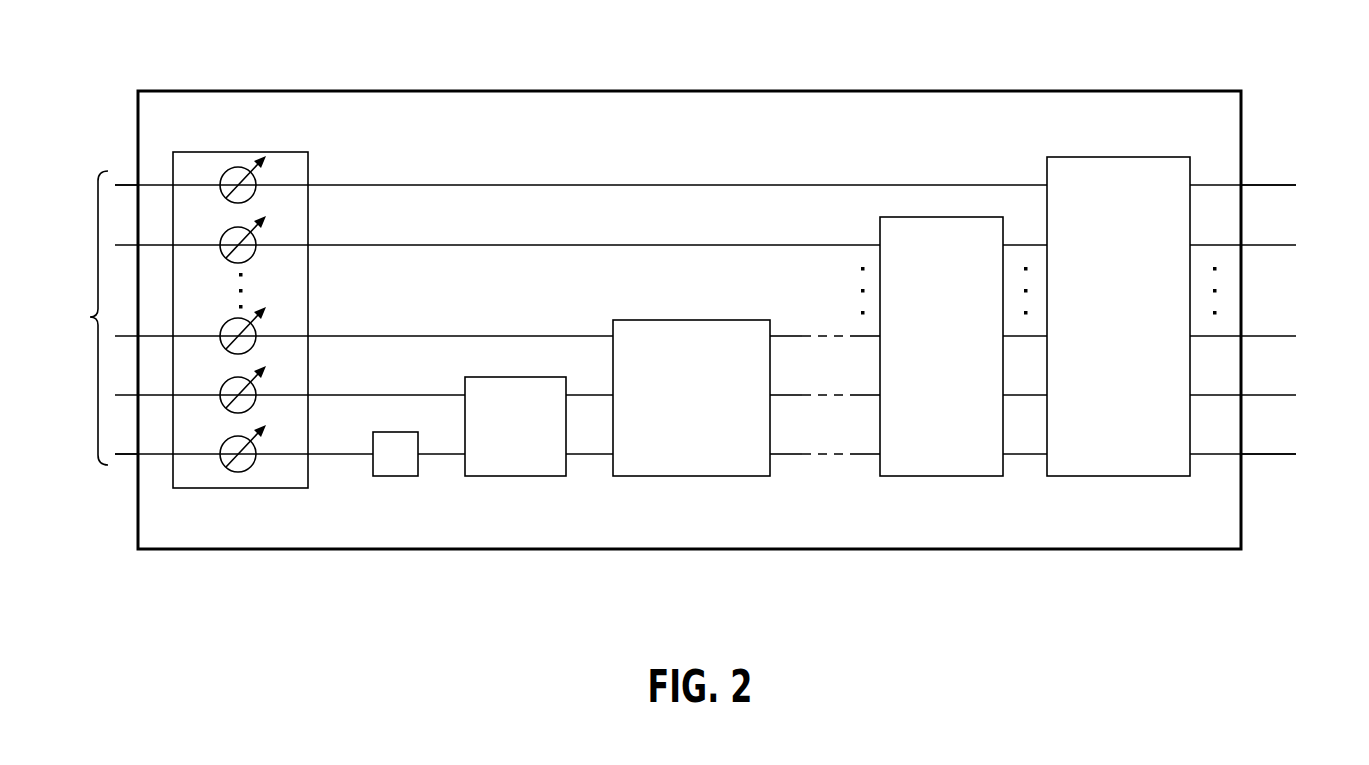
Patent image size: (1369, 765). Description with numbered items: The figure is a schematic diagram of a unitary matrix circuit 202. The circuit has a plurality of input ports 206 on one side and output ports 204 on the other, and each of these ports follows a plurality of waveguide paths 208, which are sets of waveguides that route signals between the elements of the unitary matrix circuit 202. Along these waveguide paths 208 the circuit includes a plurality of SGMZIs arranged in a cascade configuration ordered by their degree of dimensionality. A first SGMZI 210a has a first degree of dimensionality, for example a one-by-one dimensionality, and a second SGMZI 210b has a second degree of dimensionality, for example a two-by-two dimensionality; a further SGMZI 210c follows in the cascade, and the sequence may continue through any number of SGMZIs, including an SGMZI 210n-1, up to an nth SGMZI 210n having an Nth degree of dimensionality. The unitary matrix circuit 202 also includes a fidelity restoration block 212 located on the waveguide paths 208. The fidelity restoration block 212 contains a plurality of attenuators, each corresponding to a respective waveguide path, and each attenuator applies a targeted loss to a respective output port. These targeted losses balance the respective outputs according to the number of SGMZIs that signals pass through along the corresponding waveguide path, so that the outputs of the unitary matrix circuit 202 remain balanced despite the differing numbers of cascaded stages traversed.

The unitary matrix circuit 202 is at (476, 91).
The output ports 204 is at (110, 137).
The input ports 206 is at (1293, 137).
The waveguide paths 208 is at (68, 318).
The fidelity restoration block 212 is at (235, 152).
The first SGMZI 210a is at (393, 477).
The second SGMZI 210b is at (518, 477).
The SGMZI 210c is at (697, 477).
The SGMZI 210n-1 is at (944, 477).
The nth SGMZI 210n is at (1120, 477).